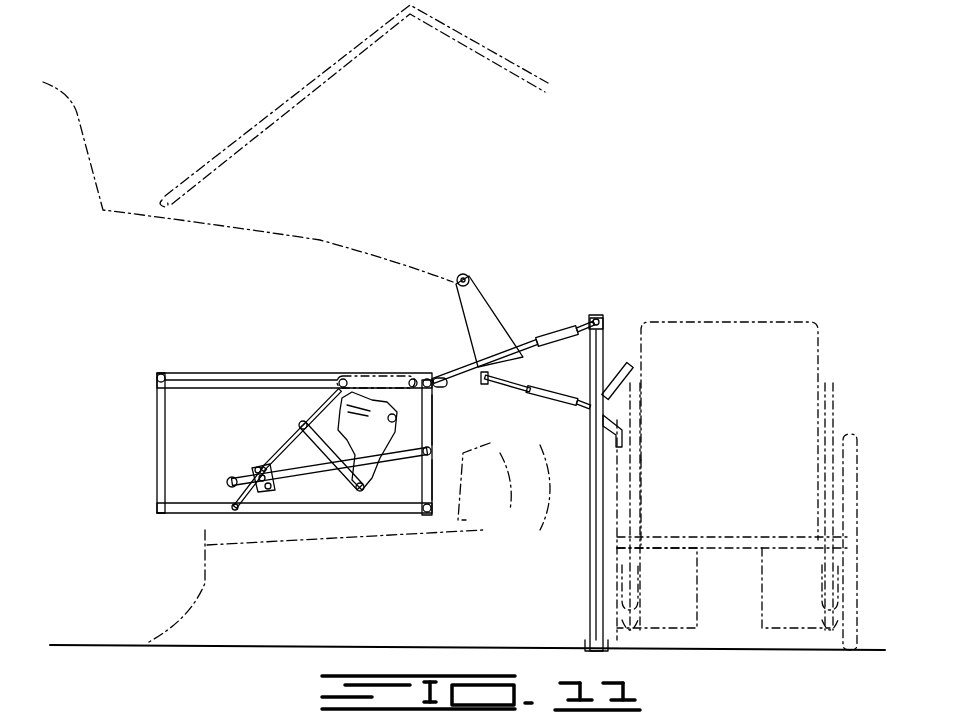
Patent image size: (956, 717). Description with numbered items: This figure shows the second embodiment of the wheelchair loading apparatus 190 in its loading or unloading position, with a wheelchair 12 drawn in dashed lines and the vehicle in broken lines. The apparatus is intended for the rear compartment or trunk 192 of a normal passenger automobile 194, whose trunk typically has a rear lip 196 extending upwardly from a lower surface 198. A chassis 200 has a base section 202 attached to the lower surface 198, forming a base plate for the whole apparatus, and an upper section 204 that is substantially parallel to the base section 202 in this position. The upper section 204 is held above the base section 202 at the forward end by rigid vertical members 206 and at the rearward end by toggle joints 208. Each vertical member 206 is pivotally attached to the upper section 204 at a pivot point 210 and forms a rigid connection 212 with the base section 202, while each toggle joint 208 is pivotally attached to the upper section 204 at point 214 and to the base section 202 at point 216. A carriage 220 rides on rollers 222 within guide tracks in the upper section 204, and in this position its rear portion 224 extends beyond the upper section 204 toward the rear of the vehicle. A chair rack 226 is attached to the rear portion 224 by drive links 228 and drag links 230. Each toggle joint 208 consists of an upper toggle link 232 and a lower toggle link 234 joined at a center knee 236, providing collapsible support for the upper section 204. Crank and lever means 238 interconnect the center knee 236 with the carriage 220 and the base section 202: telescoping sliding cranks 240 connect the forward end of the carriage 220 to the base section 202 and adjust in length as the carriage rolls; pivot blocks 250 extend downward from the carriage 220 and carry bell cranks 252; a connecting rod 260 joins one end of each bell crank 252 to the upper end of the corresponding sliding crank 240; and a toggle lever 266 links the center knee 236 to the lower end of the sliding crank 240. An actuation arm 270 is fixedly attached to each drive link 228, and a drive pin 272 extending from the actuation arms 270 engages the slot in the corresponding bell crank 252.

The wheelchair 12 is at (733, 322).
The second embodiment of the loading apparatus 190 is at (590, 220).
The trunk 192 is at (203, 252).
The passenger automobile 194 is at (77, 125).
The rear lip 196 is at (520, 443).
The lower surface 198 is at (450, 520).
The chassis 200 is at (316, 435).
The base section 202 is at (193, 515).
The upper section 204 is at (252, 376).
The rigid vertical member 206 is at (160, 473).
The toggle joint 208 is at (442, 470).
The pivot point 210 is at (158, 372).
The rigid connection 212 is at (153, 510).
The pivot point 214 is at (430, 377).
The pivot point 216 is at (426, 513).
The carriage 220 is at (377, 375).
The rollers 222 is at (340, 378).
The rear portion of carriage 224 is at (489, 396).
The chair rack 226 is at (604, 316).
The drive link 228 is at (537, 342).
The drag link 230 is at (596, 314).
The upper toggle link 232 is at (435, 424).
The lower toggle link 234 is at (430, 492).
The center knee 236 is at (432, 450).
The crank and lever means 238 is at (243, 424).
The sliding crank 240 is at (278, 456).
The pivot block 250 is at (397, 398).
The bell crank 252 is at (380, 485).
The connecting rod 260 is at (347, 480).
The toggle lever 266 is at (292, 472).
The actuation arm 270 is at (480, 297).
The drive pin 272 is at (463, 274).